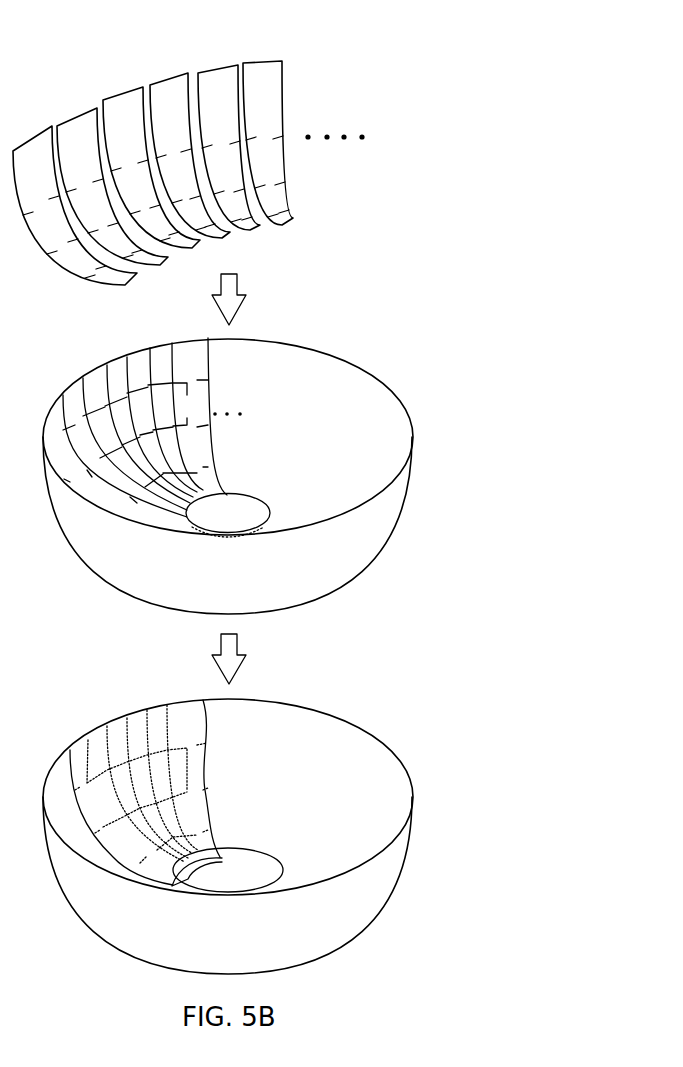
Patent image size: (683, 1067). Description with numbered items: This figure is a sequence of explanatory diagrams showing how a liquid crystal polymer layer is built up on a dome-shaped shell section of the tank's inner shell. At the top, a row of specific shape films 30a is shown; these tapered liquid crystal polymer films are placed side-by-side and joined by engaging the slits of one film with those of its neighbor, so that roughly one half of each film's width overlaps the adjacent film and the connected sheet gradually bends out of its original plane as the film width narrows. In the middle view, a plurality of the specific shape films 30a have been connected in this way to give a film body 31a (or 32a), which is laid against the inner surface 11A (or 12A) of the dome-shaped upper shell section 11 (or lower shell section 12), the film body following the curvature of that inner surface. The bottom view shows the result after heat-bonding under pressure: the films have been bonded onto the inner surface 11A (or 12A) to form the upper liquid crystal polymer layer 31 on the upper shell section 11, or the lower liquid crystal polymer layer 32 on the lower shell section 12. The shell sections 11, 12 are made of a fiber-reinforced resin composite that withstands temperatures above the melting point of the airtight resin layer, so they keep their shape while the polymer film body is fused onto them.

The specific shape film 30a is at (252, 63).
The film body 31a is at (152, 415).
The film body 32a is at (115, 370).
The upper liquid crystal polymer layer 31 is at (146, 780).
The lower liquid crystal polymer layer 32 is at (115, 722).
The upper shell section 11 is at (227, 708).
The lower shell section 12 is at (340, 575).
The inner surface of the upper shell section 11A is at (228, 608).
The inner surface of the lower shell section 12A is at (364, 342).